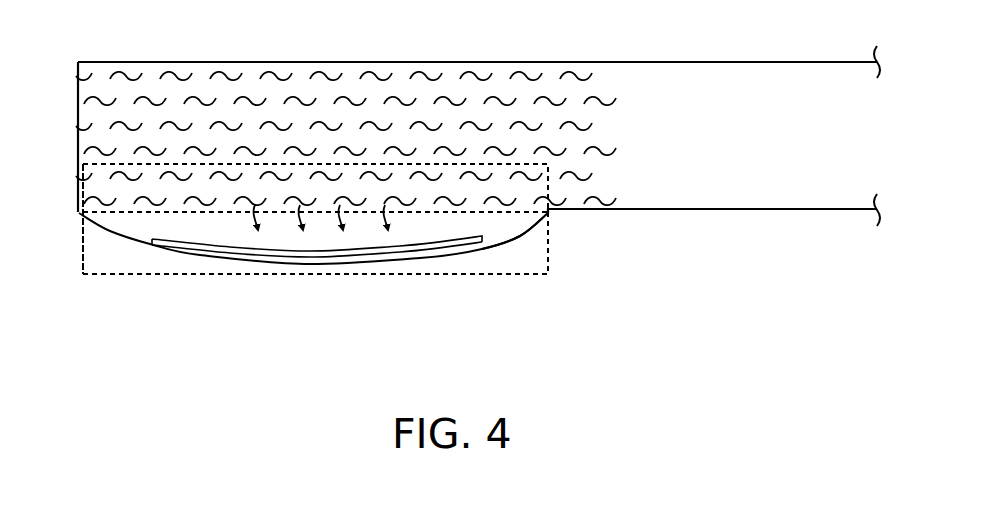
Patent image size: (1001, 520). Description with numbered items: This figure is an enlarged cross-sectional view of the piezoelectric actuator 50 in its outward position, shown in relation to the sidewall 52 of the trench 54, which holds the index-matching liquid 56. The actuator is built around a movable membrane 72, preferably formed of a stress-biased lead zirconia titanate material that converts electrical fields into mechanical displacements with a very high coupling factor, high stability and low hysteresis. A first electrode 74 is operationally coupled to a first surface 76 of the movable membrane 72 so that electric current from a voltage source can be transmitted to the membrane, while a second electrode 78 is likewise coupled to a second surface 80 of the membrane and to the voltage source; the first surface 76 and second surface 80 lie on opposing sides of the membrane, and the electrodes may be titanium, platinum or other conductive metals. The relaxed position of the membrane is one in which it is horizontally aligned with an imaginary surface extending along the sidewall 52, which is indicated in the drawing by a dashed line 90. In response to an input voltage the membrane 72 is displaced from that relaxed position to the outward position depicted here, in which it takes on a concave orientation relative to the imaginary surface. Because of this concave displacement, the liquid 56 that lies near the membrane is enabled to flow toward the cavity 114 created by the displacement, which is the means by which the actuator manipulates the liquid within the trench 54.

The piezoelectric actuator 50 is at (85, 250).
The sidewall 52 is at (800, 210).
The trench 54 is at (142, 62).
The liquid 56 is at (353, 72).
The movable membrane 72 is at (127, 241).
The first electrode 74 is at (444, 238).
The first surface 76 is at (550, 232).
The second electrode 78 is at (445, 258).
The second surface 80 is at (503, 242).
The dashed line 90 is at (218, 213).
The cavity 114 is at (344, 240).